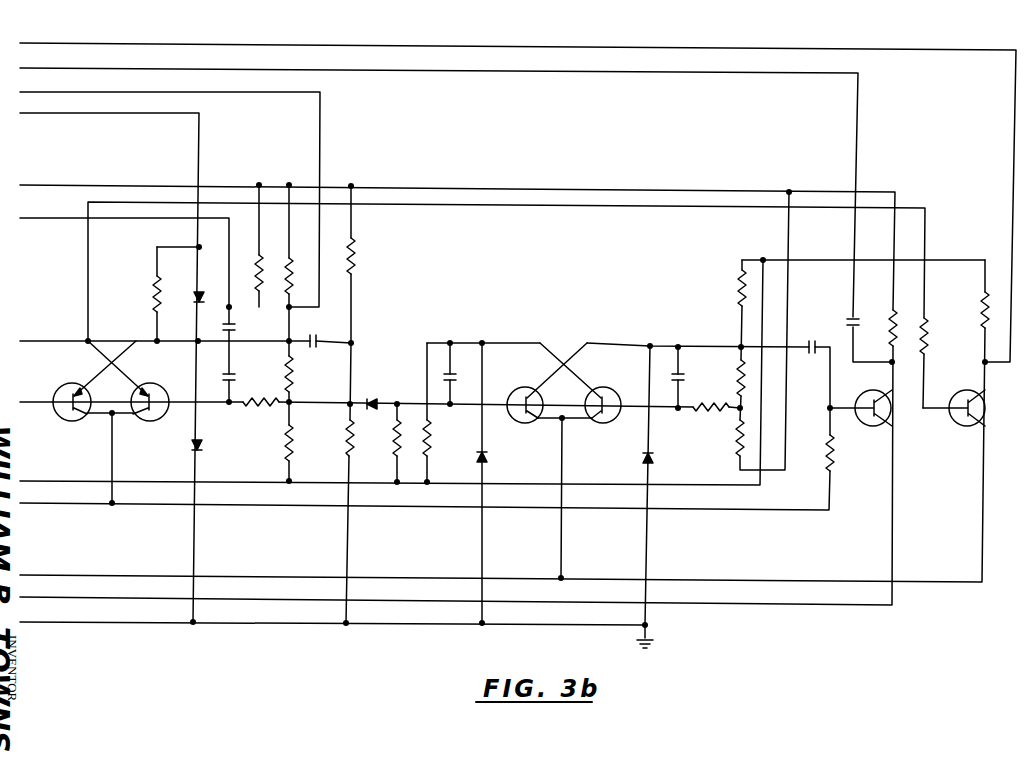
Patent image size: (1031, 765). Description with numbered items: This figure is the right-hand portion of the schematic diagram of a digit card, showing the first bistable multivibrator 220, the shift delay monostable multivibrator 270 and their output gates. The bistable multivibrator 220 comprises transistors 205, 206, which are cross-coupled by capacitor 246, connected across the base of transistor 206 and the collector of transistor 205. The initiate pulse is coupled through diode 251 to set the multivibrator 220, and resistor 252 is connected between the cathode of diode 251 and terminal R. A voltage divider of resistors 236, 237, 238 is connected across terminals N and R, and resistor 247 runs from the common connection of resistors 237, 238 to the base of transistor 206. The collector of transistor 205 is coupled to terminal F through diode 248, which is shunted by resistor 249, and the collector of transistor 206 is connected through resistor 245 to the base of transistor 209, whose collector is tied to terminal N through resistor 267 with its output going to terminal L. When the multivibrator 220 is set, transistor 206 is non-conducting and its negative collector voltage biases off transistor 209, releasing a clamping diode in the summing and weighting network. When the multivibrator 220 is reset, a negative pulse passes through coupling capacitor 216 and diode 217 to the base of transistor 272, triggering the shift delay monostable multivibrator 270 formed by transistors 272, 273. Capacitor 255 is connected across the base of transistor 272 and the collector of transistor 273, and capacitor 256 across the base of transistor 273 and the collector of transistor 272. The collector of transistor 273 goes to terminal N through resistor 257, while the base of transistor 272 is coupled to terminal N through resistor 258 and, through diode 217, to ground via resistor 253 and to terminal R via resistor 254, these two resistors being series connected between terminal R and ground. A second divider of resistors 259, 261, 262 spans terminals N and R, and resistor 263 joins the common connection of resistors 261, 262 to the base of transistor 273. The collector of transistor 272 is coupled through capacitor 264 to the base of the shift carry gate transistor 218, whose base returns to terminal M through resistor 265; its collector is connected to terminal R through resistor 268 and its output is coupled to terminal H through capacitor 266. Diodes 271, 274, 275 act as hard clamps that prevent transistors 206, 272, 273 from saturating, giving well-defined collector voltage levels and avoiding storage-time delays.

The transistor 205 is at (60, 417).
The transistor 206 is at (147, 420).
The transistor 209 is at (956, 423).
The capacitor 216 is at (317, 346).
The diode 217 is at (374, 398).
The shift carry gate transistor 218 is at (862, 423).
The first bistable multivibrator 220 is at (134, 335).
The resistor 236 is at (291, 292).
The resistor 237 is at (293, 377).
The resistor 238 is at (291, 444).
The resistor 245 is at (922, 325).
The capacitor 246 is at (235, 378).
The resistor 247 is at (254, 406).
The diode 248 is at (196, 294).
The resistor 249 is at (153, 295).
The diode 251 is at (234, 329).
The resistor 252 is at (262, 294).
The resistor 253 is at (348, 434).
The resistor 254 is at (356, 247).
The capacitor 255 is at (448, 376).
The capacitor 256 is at (686, 377).
The resistor 257 is at (429, 440).
The resistor 258 is at (393, 440).
The resistor 259 is at (738, 290).
The resistor 261 is at (738, 370).
The resistor 262 is at (738, 447).
The resistor 263 is at (703, 411).
The capacitor 264 is at (811, 341).
The resistor 265 is at (833, 462).
The capacitor 266 is at (850, 318).
The resistor 267 is at (983, 324).
The resistor 268 is at (890, 332).
The shift delay monostable multivibrator 270 is at (578, 339).
The diode 271 is at (200, 445).
The transistor 272 is at (518, 390).
The transistor 273 is at (614, 390).
The diode 274 is at (486, 456).
The diode 275 is at (654, 459).